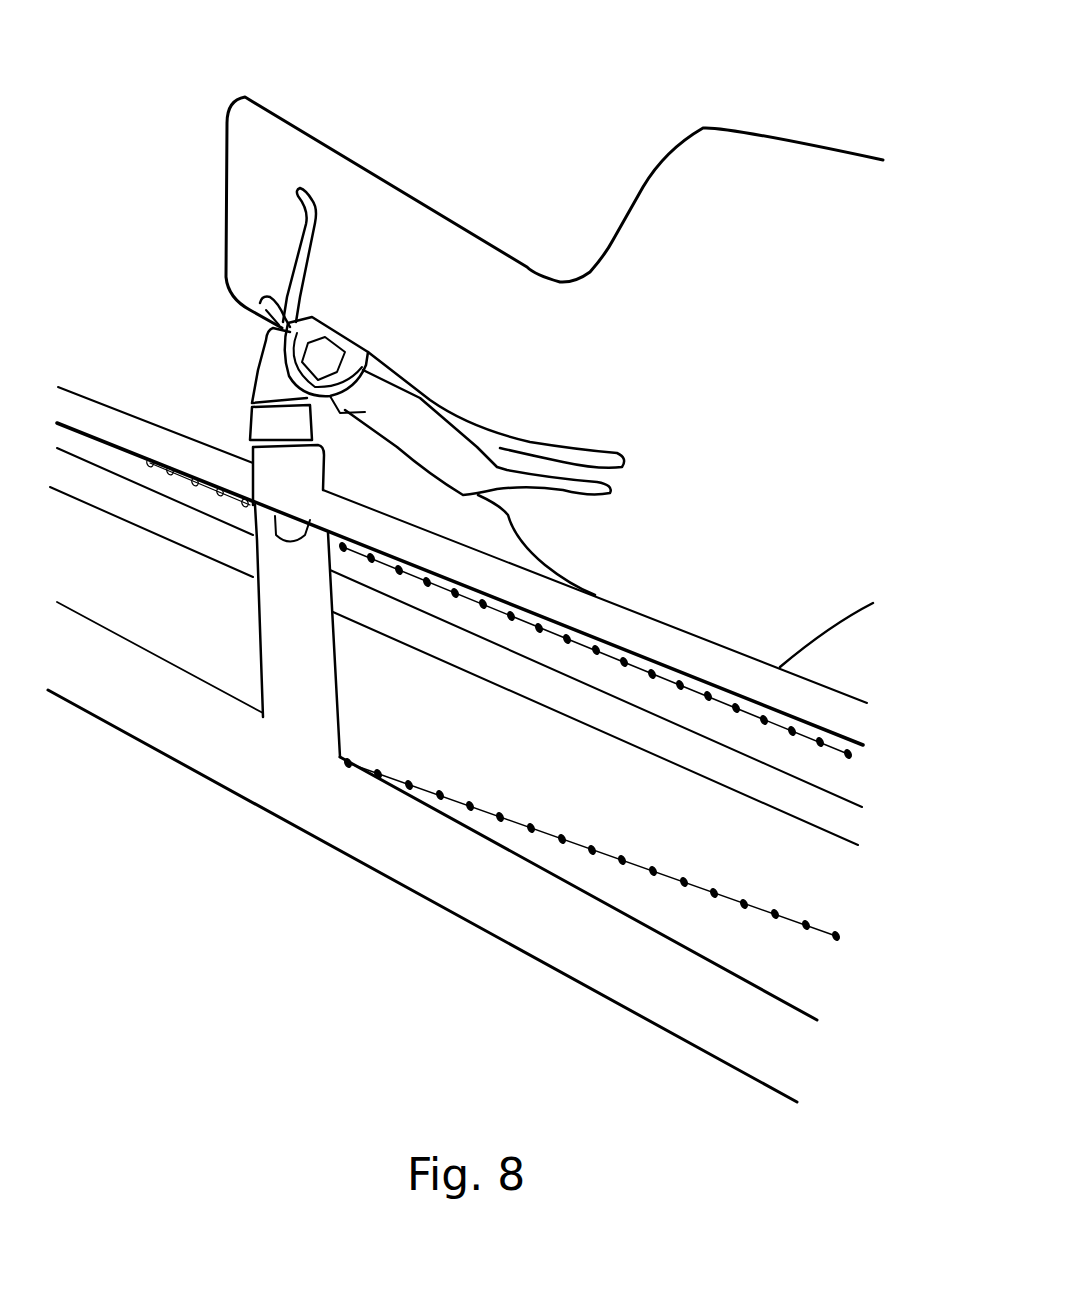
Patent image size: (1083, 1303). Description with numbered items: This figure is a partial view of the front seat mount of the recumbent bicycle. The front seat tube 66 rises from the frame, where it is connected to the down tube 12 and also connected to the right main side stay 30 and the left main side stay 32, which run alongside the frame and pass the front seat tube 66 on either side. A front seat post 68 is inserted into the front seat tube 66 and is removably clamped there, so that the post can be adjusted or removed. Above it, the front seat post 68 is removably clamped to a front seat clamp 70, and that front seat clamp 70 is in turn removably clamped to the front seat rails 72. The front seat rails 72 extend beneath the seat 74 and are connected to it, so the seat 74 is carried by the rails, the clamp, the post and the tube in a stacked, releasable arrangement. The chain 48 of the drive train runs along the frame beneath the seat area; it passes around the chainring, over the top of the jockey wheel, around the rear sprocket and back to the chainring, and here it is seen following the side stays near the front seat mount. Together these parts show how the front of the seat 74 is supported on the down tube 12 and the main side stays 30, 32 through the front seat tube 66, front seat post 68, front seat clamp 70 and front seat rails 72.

The down tube 12 is at (463, 920).
The right main side stay 30 is at (407, 650).
The left main side stay 32 is at (497, 607).
The chain 48 is at (610, 665).
The front seat tube 66 is at (253, 647).
The front seat post 68 is at (250, 425).
The front seat clamp 70 is at (250, 382).
The front seat rails 72 is at (422, 447).
The seat 74 is at (702, 122).